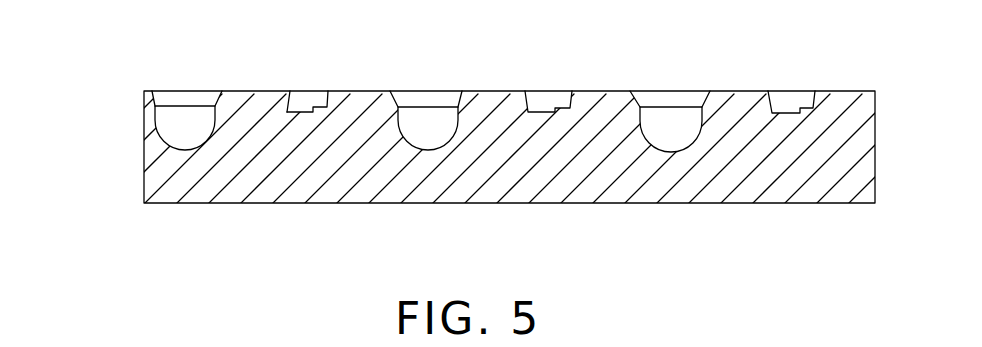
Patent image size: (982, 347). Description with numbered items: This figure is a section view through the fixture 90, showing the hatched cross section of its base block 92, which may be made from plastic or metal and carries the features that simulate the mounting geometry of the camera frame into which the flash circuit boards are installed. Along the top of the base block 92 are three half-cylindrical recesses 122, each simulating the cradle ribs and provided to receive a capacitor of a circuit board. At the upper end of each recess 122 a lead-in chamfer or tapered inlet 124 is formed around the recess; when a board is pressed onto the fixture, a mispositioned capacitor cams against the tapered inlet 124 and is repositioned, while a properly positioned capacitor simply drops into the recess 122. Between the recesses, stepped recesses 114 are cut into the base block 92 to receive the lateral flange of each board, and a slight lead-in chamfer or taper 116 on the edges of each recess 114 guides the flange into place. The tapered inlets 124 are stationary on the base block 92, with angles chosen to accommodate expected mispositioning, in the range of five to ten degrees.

The fixture 90 is at (130, 132).
The base block 92 is at (240, 183).
The stepped recess 114 is at (316, 84).
The lead-in chamfer or taper 116 is at (292, 91).
The half-cylindrical recess 122 is at (184, 115).
The lead-in chamfer or tapered inlet 124 is at (158, 91).